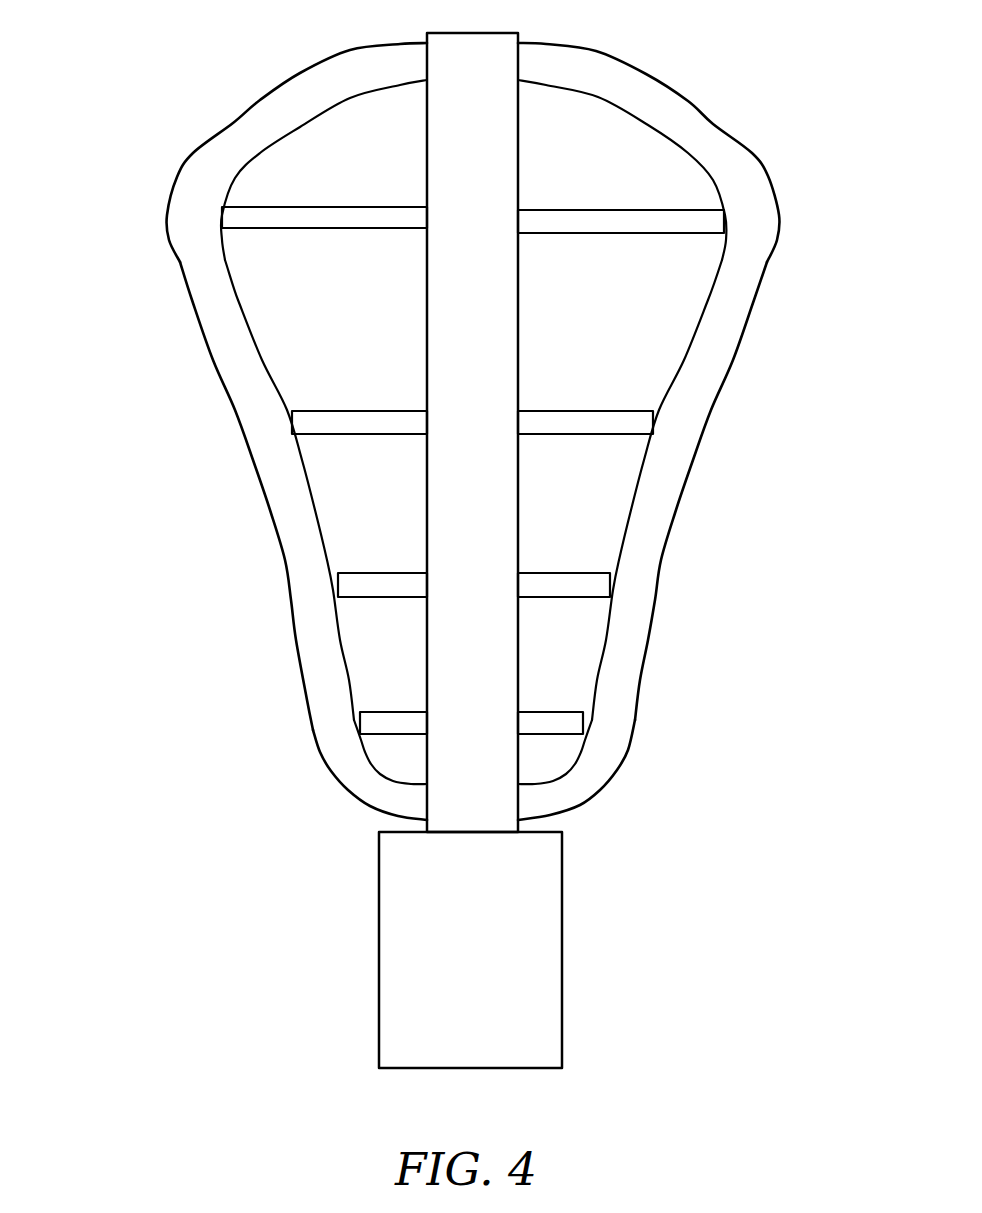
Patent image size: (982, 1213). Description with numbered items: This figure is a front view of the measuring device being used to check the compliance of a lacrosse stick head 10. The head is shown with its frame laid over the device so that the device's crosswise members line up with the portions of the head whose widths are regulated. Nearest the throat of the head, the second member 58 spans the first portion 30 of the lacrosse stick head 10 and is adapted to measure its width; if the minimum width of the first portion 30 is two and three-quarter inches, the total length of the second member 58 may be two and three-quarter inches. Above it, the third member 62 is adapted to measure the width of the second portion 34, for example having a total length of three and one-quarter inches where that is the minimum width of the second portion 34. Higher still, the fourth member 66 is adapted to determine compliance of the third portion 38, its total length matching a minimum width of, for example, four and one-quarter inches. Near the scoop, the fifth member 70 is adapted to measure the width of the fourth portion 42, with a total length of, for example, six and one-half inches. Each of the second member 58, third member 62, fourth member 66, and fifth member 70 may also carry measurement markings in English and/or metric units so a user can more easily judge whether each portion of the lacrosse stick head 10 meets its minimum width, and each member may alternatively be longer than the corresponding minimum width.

The lacrosse stick head 10 is at (833, 192).
The first portion 30 is at (648, 741).
The second portion 34 is at (263, 583).
The third portion 38 is at (755, 428).
The fourth portion 42 is at (140, 213).
The second member 58 is at (389, 718).
The third member 62 is at (552, 584).
The fourth member 66 is at (366, 420).
The fifth member 70 is at (595, 220).